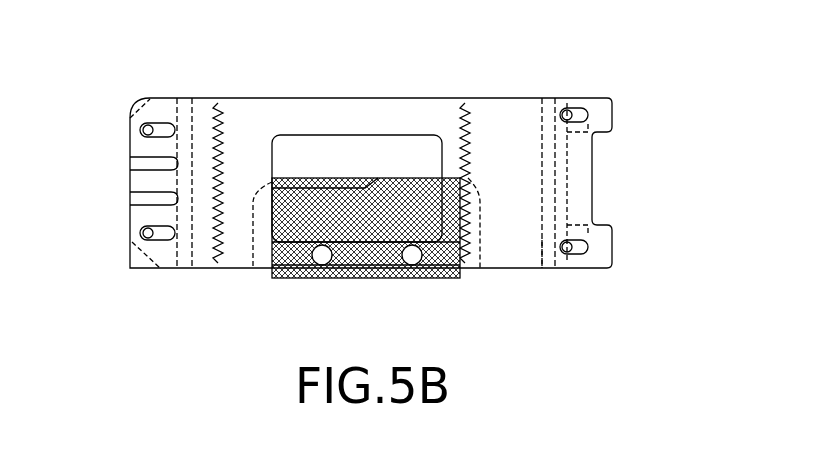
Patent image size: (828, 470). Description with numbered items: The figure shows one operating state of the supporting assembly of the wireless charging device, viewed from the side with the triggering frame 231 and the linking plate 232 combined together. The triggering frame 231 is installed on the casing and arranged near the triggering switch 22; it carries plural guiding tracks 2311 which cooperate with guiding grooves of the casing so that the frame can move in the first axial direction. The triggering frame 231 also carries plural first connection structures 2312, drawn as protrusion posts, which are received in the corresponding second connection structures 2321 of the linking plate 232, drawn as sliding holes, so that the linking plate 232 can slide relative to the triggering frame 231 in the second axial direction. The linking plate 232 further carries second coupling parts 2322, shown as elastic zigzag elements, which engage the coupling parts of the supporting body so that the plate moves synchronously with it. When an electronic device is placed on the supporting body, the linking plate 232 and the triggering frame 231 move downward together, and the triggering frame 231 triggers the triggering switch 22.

The triggering switch 22 is at (305, 226).
The triggering frame 231 is at (338, 148).
The guiding track 2311 is at (548, 248).
The first connection structure 2312 is at (146, 128).
The linking plate 232 is at (600, 176).
The second connection structure 2321 is at (166, 128).
The second coupling part 2322 is at (464, 112).